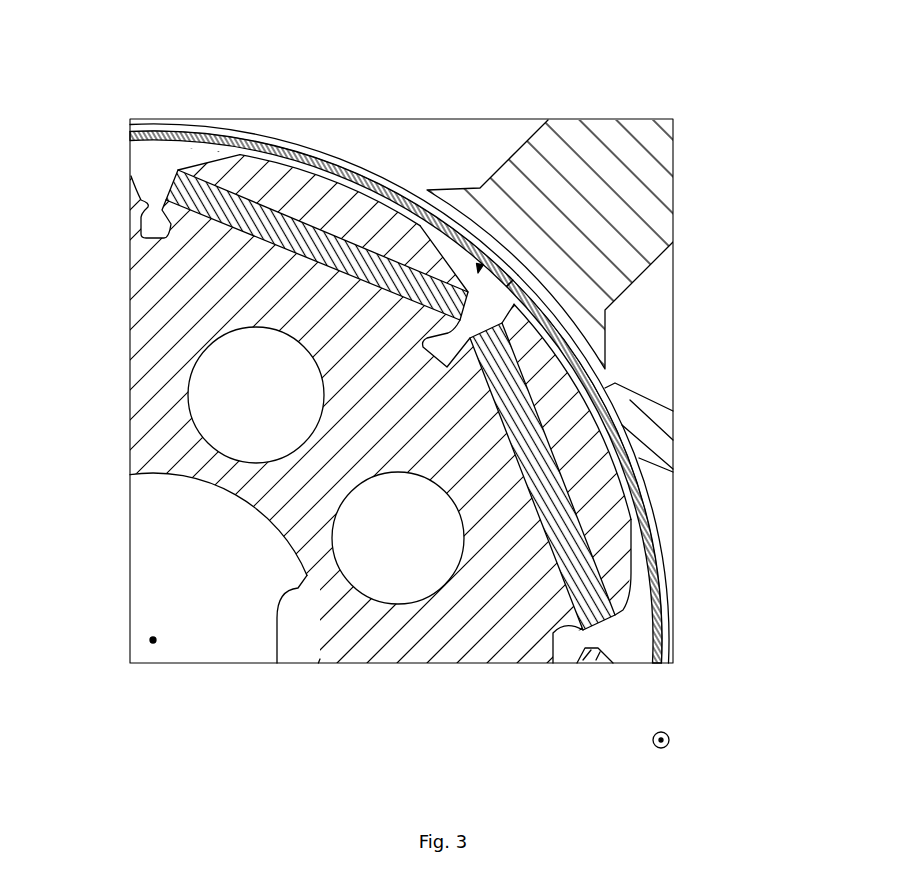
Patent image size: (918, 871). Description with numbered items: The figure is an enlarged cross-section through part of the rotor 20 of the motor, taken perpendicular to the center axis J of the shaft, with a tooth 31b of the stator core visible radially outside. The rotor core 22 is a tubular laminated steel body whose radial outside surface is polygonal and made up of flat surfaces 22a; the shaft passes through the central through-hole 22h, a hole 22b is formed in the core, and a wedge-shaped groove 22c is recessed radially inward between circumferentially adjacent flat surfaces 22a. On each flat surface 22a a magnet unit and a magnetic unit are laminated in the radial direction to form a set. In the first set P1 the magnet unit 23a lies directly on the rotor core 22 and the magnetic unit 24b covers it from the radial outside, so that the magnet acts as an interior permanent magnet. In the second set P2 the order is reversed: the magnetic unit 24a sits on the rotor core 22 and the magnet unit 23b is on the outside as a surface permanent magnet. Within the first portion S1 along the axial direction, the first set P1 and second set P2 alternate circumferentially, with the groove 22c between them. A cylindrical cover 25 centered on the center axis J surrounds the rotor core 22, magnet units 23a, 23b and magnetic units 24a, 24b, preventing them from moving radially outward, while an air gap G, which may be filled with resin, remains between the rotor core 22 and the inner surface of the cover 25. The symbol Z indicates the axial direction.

The rotor 20 is at (188, 110).
The rotor core 22 is at (500, 640).
The flat surface 22a is at (390, 290).
The hole 22b is at (195, 373).
The groove 22c is at (603, 334).
The through-hole 22h is at (283, 598).
The magnet unit 23a is at (668, 526).
The magnet unit 23b is at (305, 190).
The magnetic unit 24a is at (263, 211).
The magnetic unit 24b is at (652, 470).
The cover 25 is at (610, 380).
The tooth 31b is at (632, 190).
The air gap G is at (494, 309).
The first portion S1 is at (480, 266).
The center axis J is at (153, 650).
The axial direction Z is at (673, 740).
The first set P1 is at (748, 457).
The second set P2 is at (368, 57).